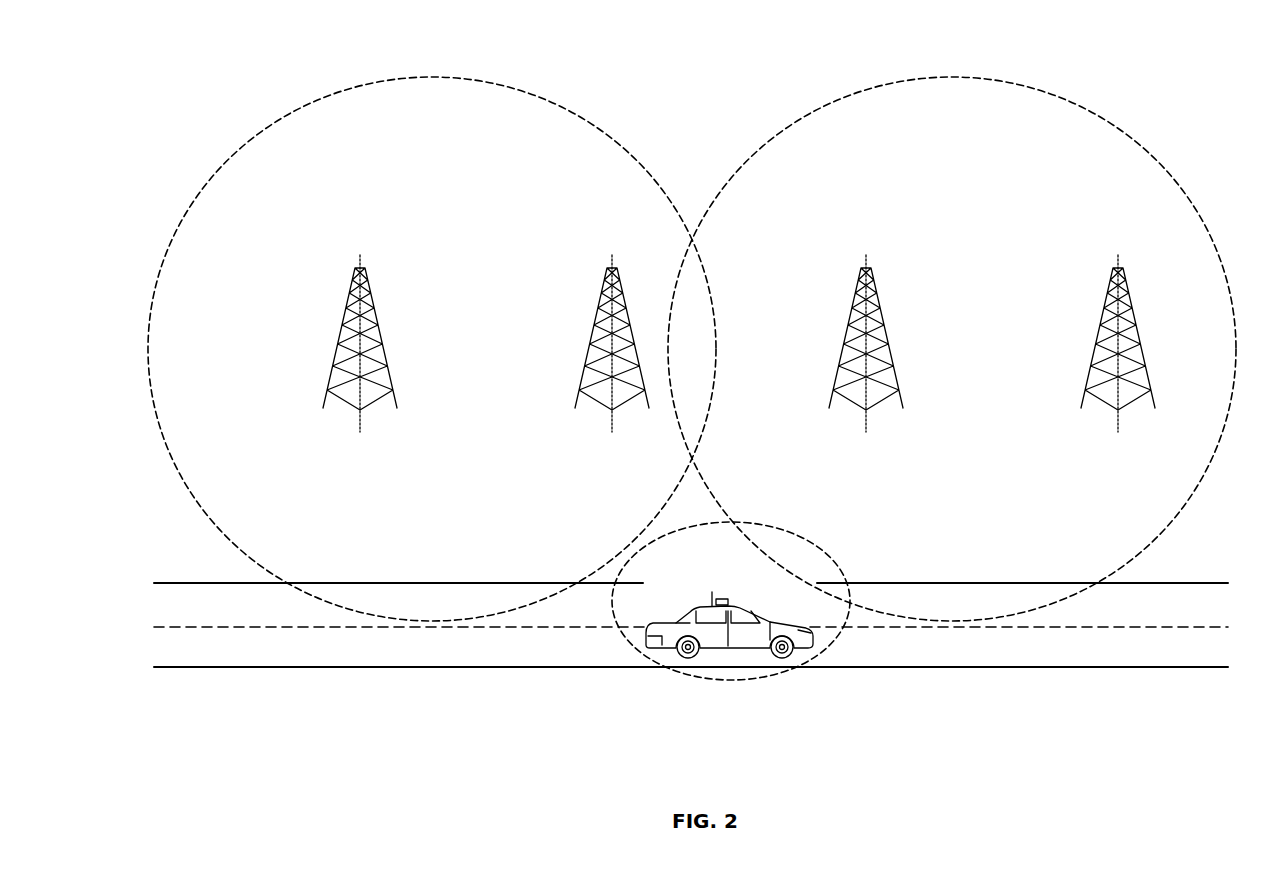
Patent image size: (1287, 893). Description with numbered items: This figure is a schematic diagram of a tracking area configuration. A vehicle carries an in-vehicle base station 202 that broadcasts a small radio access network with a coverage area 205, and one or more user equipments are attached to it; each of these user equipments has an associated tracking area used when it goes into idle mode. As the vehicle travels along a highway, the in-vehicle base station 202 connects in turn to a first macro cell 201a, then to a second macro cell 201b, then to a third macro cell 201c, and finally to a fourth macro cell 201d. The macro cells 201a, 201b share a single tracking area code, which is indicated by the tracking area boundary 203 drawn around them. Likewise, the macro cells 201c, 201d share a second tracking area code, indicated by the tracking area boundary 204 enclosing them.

The macro cell 201a is at (315, 322).
The macro cell 201b is at (567, 322).
The macro cell 201c is at (823, 322).
The macro cell 201d is at (1075, 322).
The in-vehicle base station 202 is at (665, 632).
The tracking area boundary 203 is at (300, 110).
The tracking area boundary 204 is at (818, 110).
The coverage area 205 is at (683, 670).